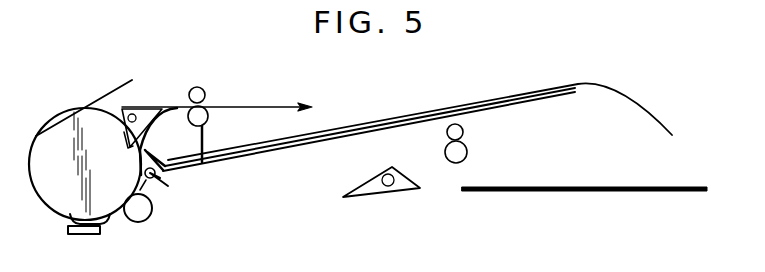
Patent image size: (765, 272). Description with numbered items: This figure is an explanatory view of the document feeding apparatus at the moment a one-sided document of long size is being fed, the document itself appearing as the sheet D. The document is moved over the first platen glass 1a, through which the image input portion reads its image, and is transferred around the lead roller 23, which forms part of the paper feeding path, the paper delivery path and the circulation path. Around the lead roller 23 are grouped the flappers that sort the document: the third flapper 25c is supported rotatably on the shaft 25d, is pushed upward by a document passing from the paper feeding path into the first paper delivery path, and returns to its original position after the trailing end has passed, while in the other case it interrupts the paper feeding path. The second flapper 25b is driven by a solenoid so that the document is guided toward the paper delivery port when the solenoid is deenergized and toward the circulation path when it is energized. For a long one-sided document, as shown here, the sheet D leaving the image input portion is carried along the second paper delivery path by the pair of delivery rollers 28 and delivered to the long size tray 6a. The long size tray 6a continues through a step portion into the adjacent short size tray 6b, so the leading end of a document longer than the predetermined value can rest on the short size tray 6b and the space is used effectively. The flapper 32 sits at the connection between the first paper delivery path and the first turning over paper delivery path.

The lead roller 23 is at (57, 196).
The first platen glass 1a is at (85, 236).
The second flapper 25b is at (148, 110).
The pair of delivery rollers 28 is at (205, 90).
The third flapper 25c is at (160, 176).
The shaft 25d is at (148, 192).
The long size tray 6a is at (575, 95).
The document sheet D is at (640, 104).
The flapper 32 is at (376, 190).
The short size tray 6b is at (686, 186).